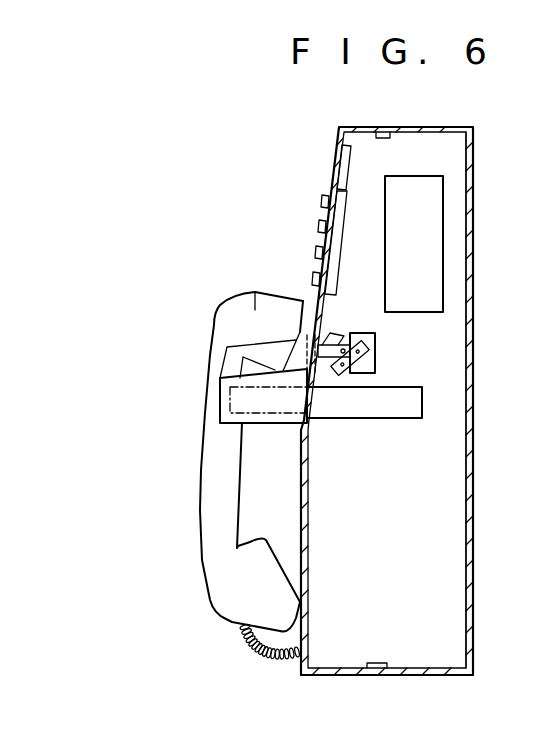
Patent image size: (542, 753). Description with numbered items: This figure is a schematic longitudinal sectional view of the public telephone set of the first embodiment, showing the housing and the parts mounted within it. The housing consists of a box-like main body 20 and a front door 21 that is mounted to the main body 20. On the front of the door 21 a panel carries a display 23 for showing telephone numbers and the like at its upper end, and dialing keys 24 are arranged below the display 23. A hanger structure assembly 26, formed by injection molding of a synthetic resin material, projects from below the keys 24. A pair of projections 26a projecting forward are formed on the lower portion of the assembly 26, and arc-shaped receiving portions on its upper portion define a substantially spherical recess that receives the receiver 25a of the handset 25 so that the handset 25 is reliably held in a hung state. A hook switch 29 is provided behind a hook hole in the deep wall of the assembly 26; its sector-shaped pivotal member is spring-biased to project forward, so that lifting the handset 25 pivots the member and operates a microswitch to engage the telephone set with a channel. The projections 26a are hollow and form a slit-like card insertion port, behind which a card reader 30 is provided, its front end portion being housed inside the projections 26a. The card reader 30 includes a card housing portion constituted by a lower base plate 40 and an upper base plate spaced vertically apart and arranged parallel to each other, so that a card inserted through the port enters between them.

The main body 20 is at (430, 127).
The front door 21 is at (331, 676).
The display 23 is at (343, 160).
The dialing keys 24 is at (313, 279).
The handset 25 is at (225, 455).
The receiver 25a is at (272, 312).
The hanger structure assembly 26 is at (220, 414).
The projections 26a is at (213, 352).
The hook switch 29 is at (377, 353).
The card reader 30 is at (389, 419).
The lower base plate 40 is at (443, 205).